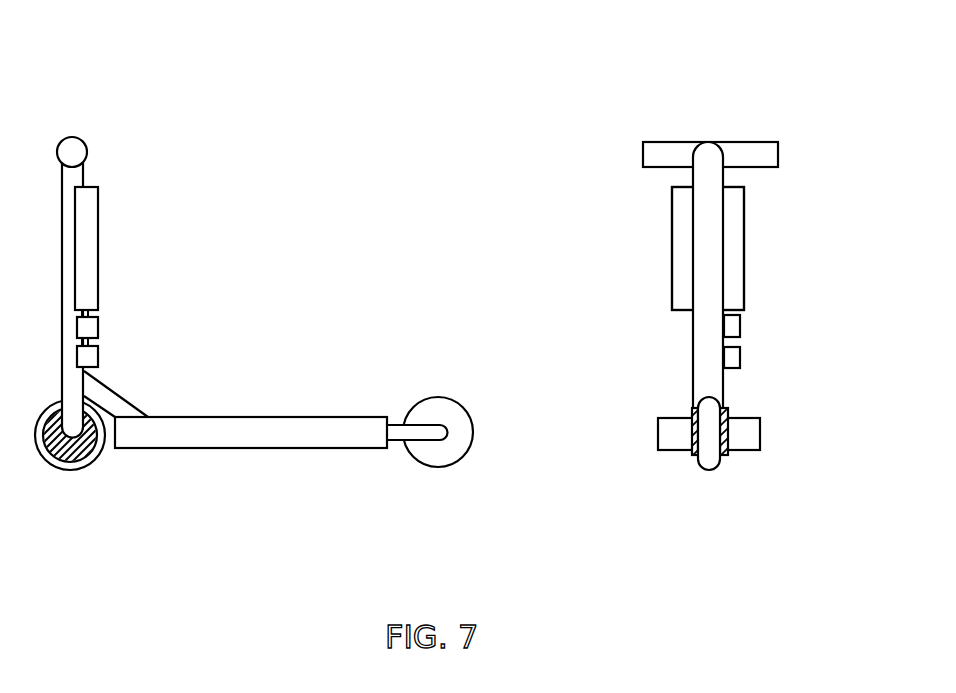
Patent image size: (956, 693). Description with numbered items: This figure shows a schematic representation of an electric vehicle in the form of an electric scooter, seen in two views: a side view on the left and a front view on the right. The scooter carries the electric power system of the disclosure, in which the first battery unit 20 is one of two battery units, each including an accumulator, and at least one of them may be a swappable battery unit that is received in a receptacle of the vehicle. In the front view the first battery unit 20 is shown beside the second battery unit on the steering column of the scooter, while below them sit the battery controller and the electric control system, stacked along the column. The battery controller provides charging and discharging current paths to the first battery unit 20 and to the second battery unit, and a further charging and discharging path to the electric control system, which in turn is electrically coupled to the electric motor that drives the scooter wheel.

The first battery unit 20 is at (676, 260).